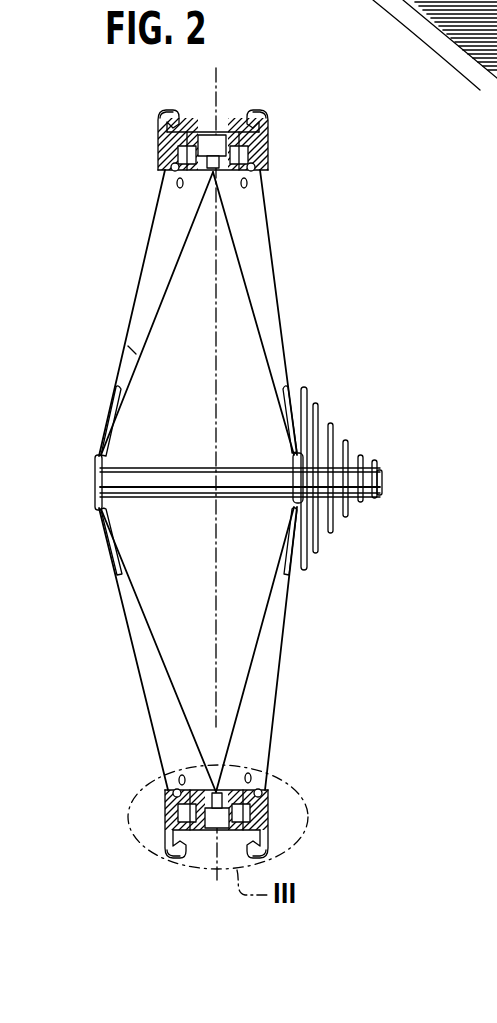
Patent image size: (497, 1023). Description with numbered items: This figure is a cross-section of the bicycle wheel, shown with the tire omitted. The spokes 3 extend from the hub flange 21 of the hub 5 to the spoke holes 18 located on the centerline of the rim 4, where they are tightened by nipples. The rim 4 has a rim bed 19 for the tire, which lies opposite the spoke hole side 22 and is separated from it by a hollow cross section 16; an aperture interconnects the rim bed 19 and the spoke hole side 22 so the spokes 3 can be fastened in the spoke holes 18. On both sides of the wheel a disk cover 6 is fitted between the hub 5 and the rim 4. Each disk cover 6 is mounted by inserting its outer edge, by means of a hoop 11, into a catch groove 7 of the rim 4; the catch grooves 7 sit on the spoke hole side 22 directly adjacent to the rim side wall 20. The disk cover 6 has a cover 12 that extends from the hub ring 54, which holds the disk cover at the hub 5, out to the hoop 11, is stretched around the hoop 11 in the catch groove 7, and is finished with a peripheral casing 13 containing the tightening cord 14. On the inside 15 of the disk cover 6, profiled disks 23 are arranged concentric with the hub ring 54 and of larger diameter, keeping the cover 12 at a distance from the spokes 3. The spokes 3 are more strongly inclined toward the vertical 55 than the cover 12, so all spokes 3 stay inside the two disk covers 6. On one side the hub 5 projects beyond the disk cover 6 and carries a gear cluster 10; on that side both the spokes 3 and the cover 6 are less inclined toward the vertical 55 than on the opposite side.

The spokes 3 is at (215, 481).
The rim 4 is at (289, 165).
The hub 5 is at (135, 470).
The disk cover 6 is at (302, 291).
The catch groove 7 is at (168, 150).
The gear cluster 10 is at (368, 413).
The hoop 11 is at (171, 170).
The cover 12 is at (167, 277).
The peripheral casing 13 is at (177, 187).
The tightening cord 14 is at (247, 188).
The inside 15 is at (122, 350).
The hollow cross section 16 is at (177, 133).
The spoke holes 18 is at (183, 776).
The rim bed 19 is at (233, 107).
The rim side wall 20 is at (160, 128).
The hub flange 21 is at (96, 505).
The spoke hole side 22 is at (204, 198).
The profiled disks 23 is at (117, 393).
The hub ring 54 is at (95, 460).
The vertical 55 is at (218, 612).